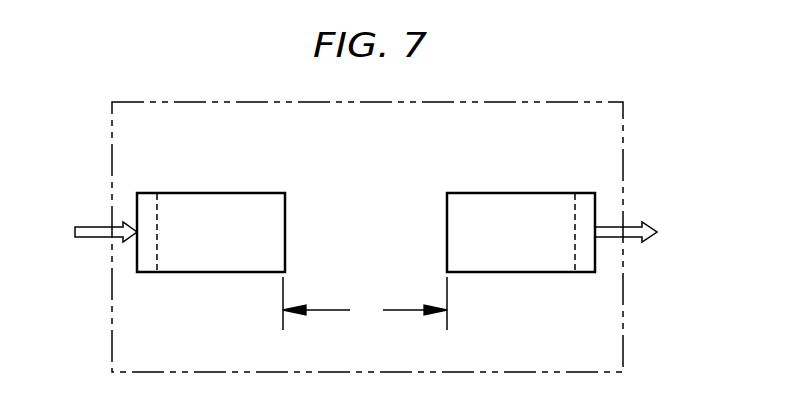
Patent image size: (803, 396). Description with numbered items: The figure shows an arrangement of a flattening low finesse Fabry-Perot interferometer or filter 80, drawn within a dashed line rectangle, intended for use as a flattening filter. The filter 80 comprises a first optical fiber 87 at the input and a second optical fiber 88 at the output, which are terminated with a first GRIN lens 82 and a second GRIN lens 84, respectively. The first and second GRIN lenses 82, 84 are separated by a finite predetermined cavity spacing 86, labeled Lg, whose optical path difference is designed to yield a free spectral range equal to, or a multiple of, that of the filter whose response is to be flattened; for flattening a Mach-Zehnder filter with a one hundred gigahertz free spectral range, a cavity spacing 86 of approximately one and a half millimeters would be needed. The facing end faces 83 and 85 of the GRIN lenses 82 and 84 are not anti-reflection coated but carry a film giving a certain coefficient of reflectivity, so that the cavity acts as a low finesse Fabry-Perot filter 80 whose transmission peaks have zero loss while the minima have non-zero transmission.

The flattening low Finesse Fabry-Perot filter 80 is at (112, 123).
The first GRIN lens 82 is at (212, 193).
The end face of first GRIN lens 83 is at (148, 193).
The second GRIN lens 84 is at (518, 193).
The end face of second GRIN lens 85 is at (581, 193).
The cavity spacing 86 is at (405, 311).
The first optical fiber 87 is at (92, 224).
The second optical fiber 88 is at (634, 224).